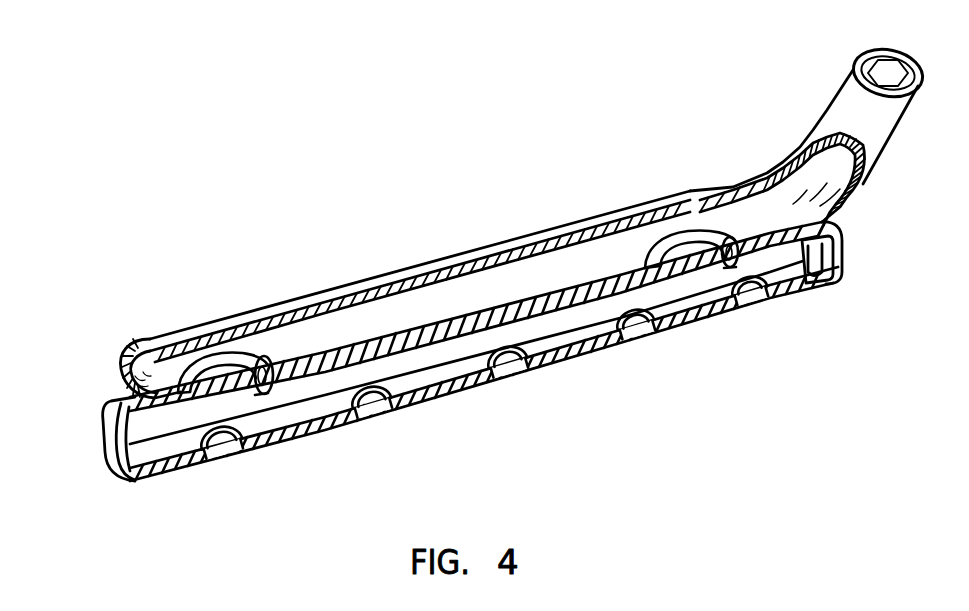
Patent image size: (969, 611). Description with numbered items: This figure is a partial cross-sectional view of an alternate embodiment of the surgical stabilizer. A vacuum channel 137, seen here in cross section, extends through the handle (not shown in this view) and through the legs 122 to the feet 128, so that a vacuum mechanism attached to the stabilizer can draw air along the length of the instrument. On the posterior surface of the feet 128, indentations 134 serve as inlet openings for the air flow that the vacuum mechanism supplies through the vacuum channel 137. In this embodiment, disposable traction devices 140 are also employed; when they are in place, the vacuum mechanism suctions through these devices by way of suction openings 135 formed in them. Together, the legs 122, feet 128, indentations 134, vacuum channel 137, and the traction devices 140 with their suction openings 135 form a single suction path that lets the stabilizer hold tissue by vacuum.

The legs 122 is at (847, 98).
The feet 128 is at (412, 277).
The indentations 134 is at (683, 248).
The suction openings 135 is at (217, 446).
The vacuum channel 137 is at (833, 178).
The disposable traction devices 140 is at (118, 452).